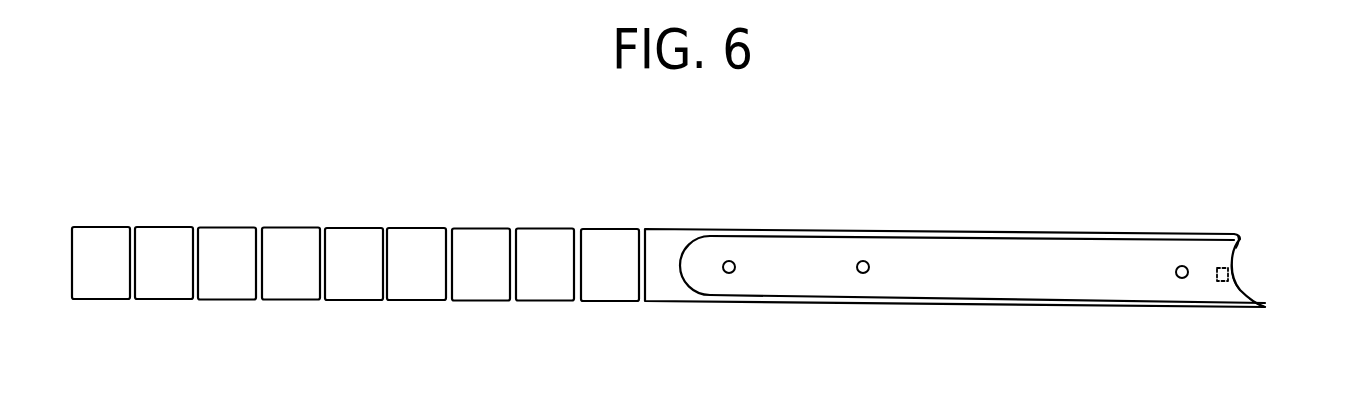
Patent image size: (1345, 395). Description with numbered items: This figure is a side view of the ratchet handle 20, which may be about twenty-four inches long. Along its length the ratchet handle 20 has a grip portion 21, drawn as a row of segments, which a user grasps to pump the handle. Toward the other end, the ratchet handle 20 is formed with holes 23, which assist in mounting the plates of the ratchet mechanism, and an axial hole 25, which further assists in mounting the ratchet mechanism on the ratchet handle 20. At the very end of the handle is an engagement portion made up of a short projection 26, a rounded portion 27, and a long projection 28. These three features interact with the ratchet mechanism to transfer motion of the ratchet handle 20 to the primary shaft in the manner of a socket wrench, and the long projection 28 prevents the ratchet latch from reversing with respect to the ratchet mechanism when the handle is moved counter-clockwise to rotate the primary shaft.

The ratchet handle 20 is at (657, 305).
The grip portion 21 is at (577, 303).
The holes 23 is at (862, 273).
The axial hole 25 is at (1217, 266).
The short projection 26 is at (1242, 241).
The rounded portion 27 is at (1243, 291).
The long projection 28 is at (1267, 307).